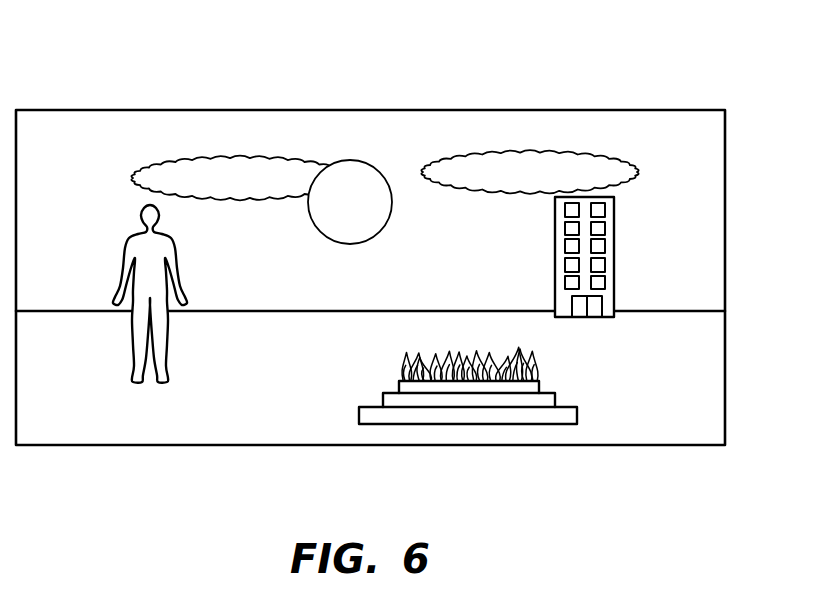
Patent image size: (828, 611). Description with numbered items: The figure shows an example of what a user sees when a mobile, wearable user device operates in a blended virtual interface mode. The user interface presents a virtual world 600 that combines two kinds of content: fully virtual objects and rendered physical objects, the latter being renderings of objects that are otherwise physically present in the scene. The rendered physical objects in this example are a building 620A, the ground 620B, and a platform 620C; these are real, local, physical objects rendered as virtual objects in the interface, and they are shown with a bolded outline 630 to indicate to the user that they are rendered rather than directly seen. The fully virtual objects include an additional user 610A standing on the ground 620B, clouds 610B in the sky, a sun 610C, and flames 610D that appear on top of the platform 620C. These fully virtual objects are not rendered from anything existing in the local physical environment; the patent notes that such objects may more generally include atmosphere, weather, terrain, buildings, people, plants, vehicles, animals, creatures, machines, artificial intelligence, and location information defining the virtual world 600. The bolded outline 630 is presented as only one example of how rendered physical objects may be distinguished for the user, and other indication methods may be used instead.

The virtual world 600 is at (581, 99).
The additional user 610A is at (136, 250).
The clouds 610B is at (165, 172).
The sun 610C is at (367, 199).
The flames 610D is at (405, 372).
The building 620A is at (610, 268).
The ground 620B is at (367, 318).
The platform 620C is at (364, 419).
The bolded outline 630 is at (266, 310).